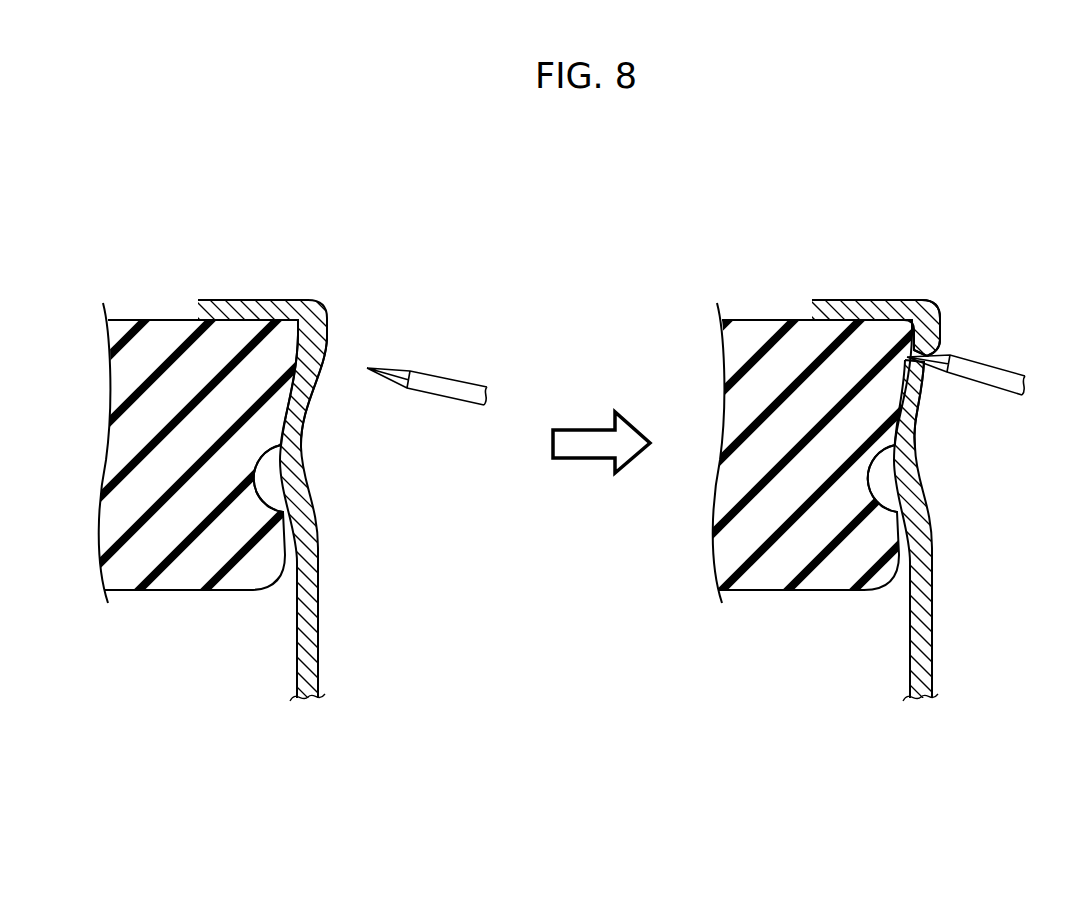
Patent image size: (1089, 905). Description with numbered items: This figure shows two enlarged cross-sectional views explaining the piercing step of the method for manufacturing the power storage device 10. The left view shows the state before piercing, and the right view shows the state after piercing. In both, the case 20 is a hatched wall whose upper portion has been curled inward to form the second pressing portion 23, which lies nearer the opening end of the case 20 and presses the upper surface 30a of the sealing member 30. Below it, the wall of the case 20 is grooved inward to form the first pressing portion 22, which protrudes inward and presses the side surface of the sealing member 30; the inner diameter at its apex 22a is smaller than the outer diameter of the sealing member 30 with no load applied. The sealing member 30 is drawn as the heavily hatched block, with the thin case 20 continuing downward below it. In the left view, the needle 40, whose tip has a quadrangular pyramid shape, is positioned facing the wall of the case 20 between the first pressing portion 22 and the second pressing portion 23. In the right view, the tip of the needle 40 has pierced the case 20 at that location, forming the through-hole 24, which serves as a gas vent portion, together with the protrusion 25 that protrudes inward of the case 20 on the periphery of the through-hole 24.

The power storage device 10 is at (250, 232).
The case 20 is at (323, 597).
The first pressing portion 22 is at (303, 451).
The apex 22a is at (283, 511).
The second pressing portion 23 is at (228, 300).
The through-hole 24 is at (942, 343).
The protrusion 25 is at (932, 302).
The sealing member 30 is at (178, 346).
The upper surface 30a is at (129, 321).
The needle 40 is at (478, 388).